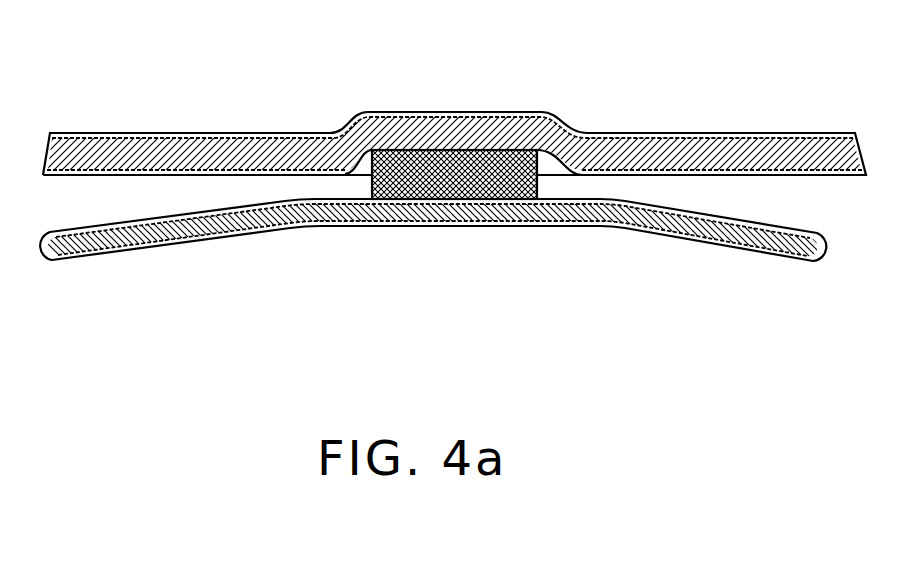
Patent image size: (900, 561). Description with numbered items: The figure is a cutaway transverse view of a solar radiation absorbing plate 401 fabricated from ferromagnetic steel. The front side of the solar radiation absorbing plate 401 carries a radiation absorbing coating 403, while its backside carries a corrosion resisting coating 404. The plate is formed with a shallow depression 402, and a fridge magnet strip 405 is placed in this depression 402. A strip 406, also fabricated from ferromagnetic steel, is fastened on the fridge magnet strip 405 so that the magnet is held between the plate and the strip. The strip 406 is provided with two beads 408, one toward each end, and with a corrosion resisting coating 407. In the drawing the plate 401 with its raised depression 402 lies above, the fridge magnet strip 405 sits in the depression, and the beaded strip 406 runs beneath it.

The solar radiation absorbing plate 401 is at (183, 133).
The shallow depression 402 is at (460, 152).
The radiation absorbing coating 403 is at (628, 133).
The corrosion resisting coating 404 is at (728, 173).
The fridge magnet strip 405 is at (458, 172).
The strip 406 is at (513, 222).
The corrosion resisting coating 407 is at (490, 222).
The beads 408 is at (700, 222).